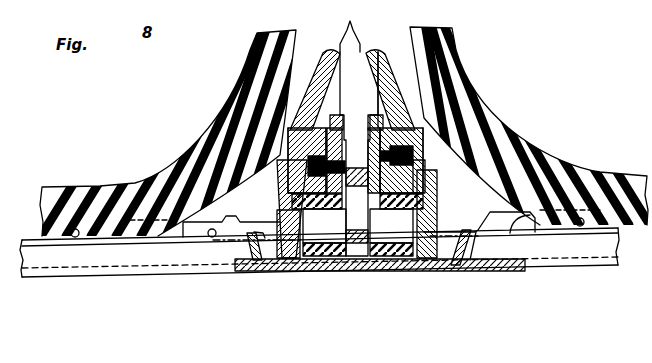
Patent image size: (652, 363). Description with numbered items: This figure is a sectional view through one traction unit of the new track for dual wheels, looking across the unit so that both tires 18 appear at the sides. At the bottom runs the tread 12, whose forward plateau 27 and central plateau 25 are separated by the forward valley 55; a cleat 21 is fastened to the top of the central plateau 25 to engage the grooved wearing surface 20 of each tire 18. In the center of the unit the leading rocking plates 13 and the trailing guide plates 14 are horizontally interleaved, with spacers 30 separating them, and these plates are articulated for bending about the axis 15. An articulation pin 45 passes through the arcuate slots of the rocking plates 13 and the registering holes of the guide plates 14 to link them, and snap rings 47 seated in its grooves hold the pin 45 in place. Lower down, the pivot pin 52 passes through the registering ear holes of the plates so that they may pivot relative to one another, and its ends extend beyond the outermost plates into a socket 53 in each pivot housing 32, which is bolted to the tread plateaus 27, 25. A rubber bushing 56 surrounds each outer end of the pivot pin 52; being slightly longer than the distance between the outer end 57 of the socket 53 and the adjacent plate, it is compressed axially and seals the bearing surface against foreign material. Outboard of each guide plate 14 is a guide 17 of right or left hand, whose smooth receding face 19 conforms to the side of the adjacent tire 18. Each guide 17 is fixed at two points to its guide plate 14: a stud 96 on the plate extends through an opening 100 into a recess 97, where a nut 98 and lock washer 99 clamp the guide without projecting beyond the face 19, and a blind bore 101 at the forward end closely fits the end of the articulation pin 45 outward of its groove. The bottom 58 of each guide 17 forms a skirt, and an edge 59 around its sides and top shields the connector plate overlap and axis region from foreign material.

The tread 12 is at (556, 256).
The rocking plate 13 is at (365, 100).
The guide plate 14 is at (367, 72).
The axis 15 is at (397, 223).
The guide 17 is at (380, 52).
The tire 18 is at (100, 183).
The receding face 19 is at (404, 86).
The wearing surface 20 is at (83, 243).
The cleat 21 is at (185, 219).
The central plateau 25 is at (256, 232).
The forward plateau 27 is at (213, 270).
The spacer 30 is at (356, 123).
The pivot housing 32 is at (297, 258).
The articulation pin 45 is at (304, 150).
The snap ring 47 is at (290, 185).
The pivot pin 52 is at (427, 205).
The socket 53 is at (256, 262).
The forward valley 55 is at (470, 262).
The rubber bushing 56 is at (312, 262).
The outer end of socket 57 is at (285, 262).
The bottom of guide 58 is at (437, 226).
The edge 59 is at (351, 26).
The stud 96 is at (440, 160).
The recess 97 is at (436, 148).
The nut 98 is at (432, 136).
The lock washer 99 is at (426, 122).
The opening 100 is at (420, 110).
The blind bore 101 is at (306, 165).